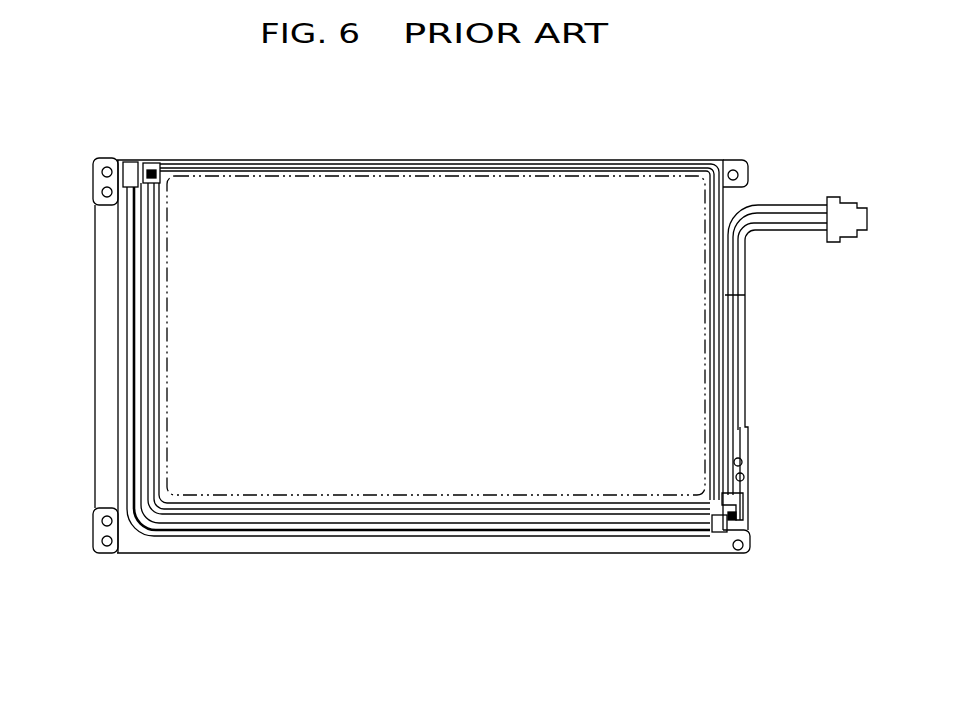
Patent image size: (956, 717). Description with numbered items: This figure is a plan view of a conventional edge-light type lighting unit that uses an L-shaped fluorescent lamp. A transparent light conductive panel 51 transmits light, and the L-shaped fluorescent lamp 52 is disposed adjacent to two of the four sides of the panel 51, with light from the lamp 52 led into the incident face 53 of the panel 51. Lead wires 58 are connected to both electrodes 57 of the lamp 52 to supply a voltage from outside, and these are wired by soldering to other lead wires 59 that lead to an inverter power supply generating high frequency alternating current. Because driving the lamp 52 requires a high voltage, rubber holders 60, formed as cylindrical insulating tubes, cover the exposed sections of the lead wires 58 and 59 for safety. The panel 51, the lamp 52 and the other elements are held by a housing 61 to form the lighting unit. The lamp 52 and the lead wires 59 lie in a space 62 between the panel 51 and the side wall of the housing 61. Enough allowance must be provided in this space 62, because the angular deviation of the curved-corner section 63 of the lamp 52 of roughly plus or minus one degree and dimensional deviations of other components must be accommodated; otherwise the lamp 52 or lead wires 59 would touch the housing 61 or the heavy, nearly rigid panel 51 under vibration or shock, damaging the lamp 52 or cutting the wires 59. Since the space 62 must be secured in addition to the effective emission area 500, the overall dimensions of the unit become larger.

The transparent light conductive panel 51 is at (447, 215).
The L-shaped fluorescent lamp 52 is at (530, 518).
The incident face 53 is at (158, 316).
The electrodes 57 is at (165, 167).
The lead wires 58 is at (152, 168).
The lead wires 59 is at (133, 475).
The rubber holders 60 is at (133, 168).
The housing 61 is at (123, 260).
The space 62 is at (155, 403).
The curved-corner section 63 is at (150, 515).
The effective emission area 500 is at (560, 178).